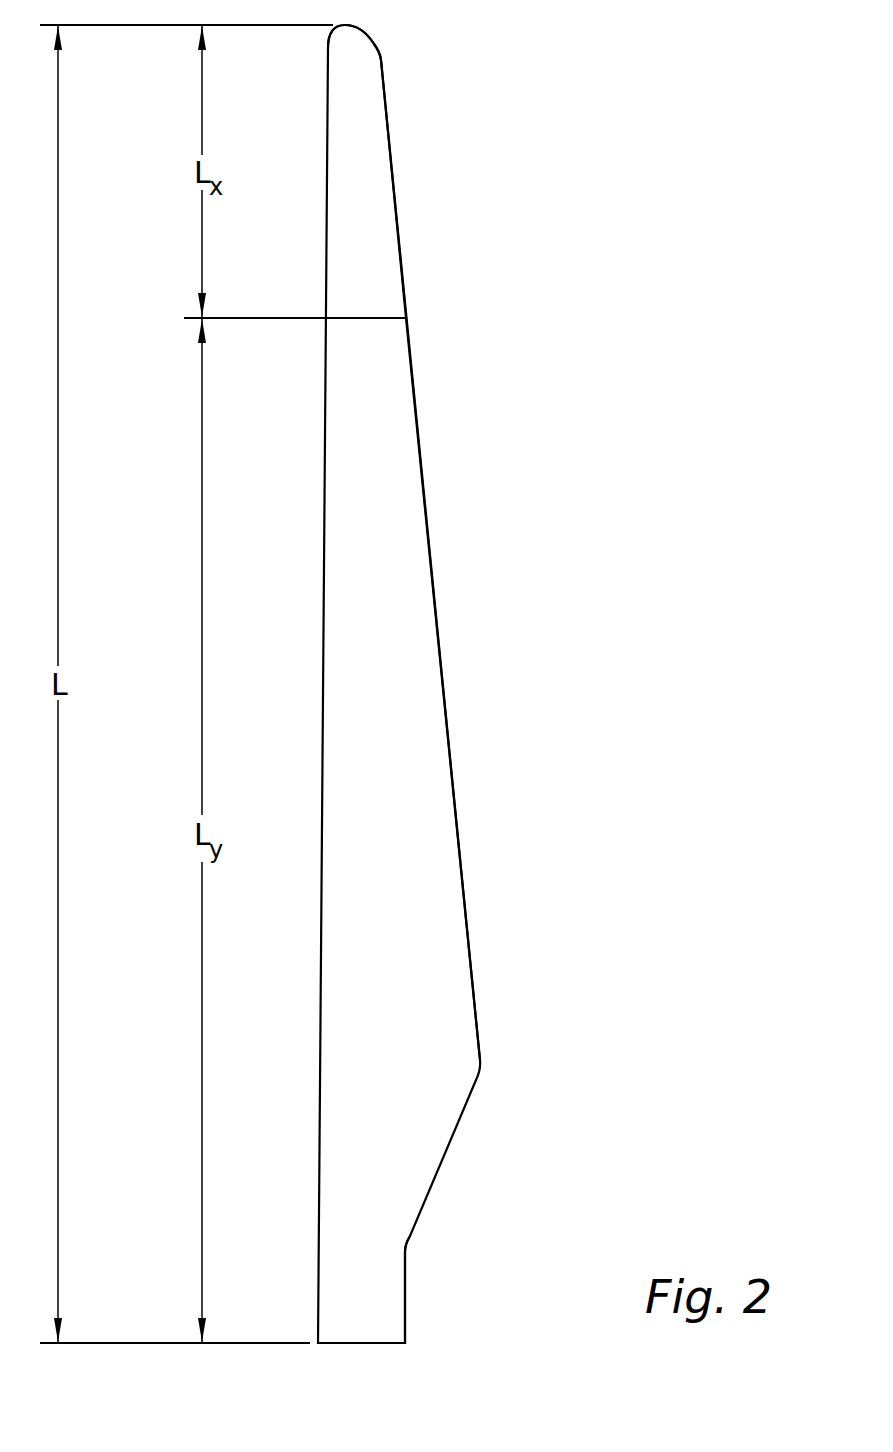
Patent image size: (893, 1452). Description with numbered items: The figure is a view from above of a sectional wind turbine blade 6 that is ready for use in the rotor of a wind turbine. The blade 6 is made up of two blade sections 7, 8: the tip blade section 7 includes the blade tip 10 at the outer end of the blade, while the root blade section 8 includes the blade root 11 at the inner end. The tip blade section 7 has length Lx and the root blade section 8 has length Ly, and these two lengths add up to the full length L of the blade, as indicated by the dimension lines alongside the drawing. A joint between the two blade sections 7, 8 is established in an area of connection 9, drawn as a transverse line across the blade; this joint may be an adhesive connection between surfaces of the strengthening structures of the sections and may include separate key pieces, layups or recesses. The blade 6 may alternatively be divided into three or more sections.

The sectional wind turbine blade 6 is at (628, 150).
The tip blade section 7 is at (383, 173).
The root blade section 8 is at (427, 700).
The area of connection 9 is at (398, 313).
The blade tip 10 is at (360, 33).
The blade root 11 is at (405, 1317).